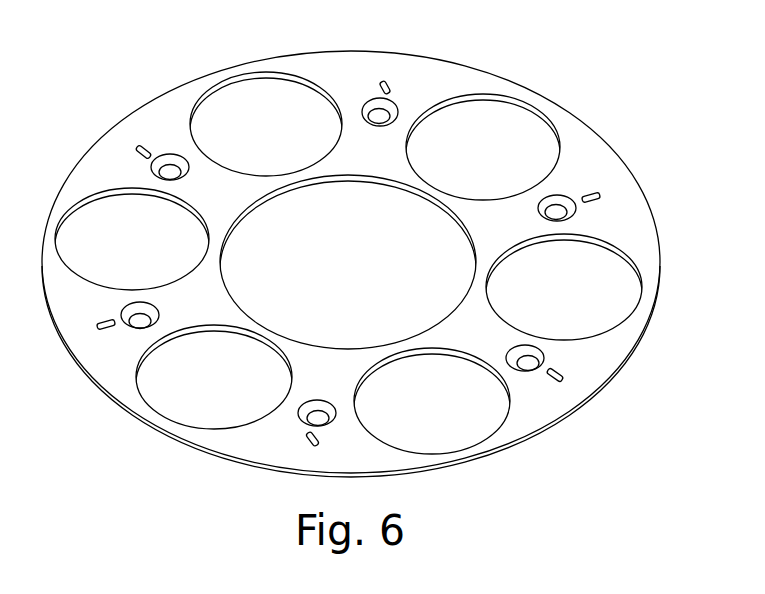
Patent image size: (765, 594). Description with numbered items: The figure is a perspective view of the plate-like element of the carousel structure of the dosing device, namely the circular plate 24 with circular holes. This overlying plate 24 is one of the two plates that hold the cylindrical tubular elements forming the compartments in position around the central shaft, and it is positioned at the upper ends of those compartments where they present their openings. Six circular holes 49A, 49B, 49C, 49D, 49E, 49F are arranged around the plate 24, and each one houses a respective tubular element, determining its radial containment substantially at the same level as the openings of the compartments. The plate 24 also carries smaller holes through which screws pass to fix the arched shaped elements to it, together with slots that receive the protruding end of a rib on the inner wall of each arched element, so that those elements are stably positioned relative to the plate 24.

The plate with circular holes 24 is at (592, 150).
The circular hole 49A is at (157, 255).
The circular hole 49B is at (266, 127).
The circular hole 49C is at (483, 150).
The circular hole 49D is at (564, 290).
The circular hole 49E is at (432, 404).
The circular hole 49F is at (214, 380).